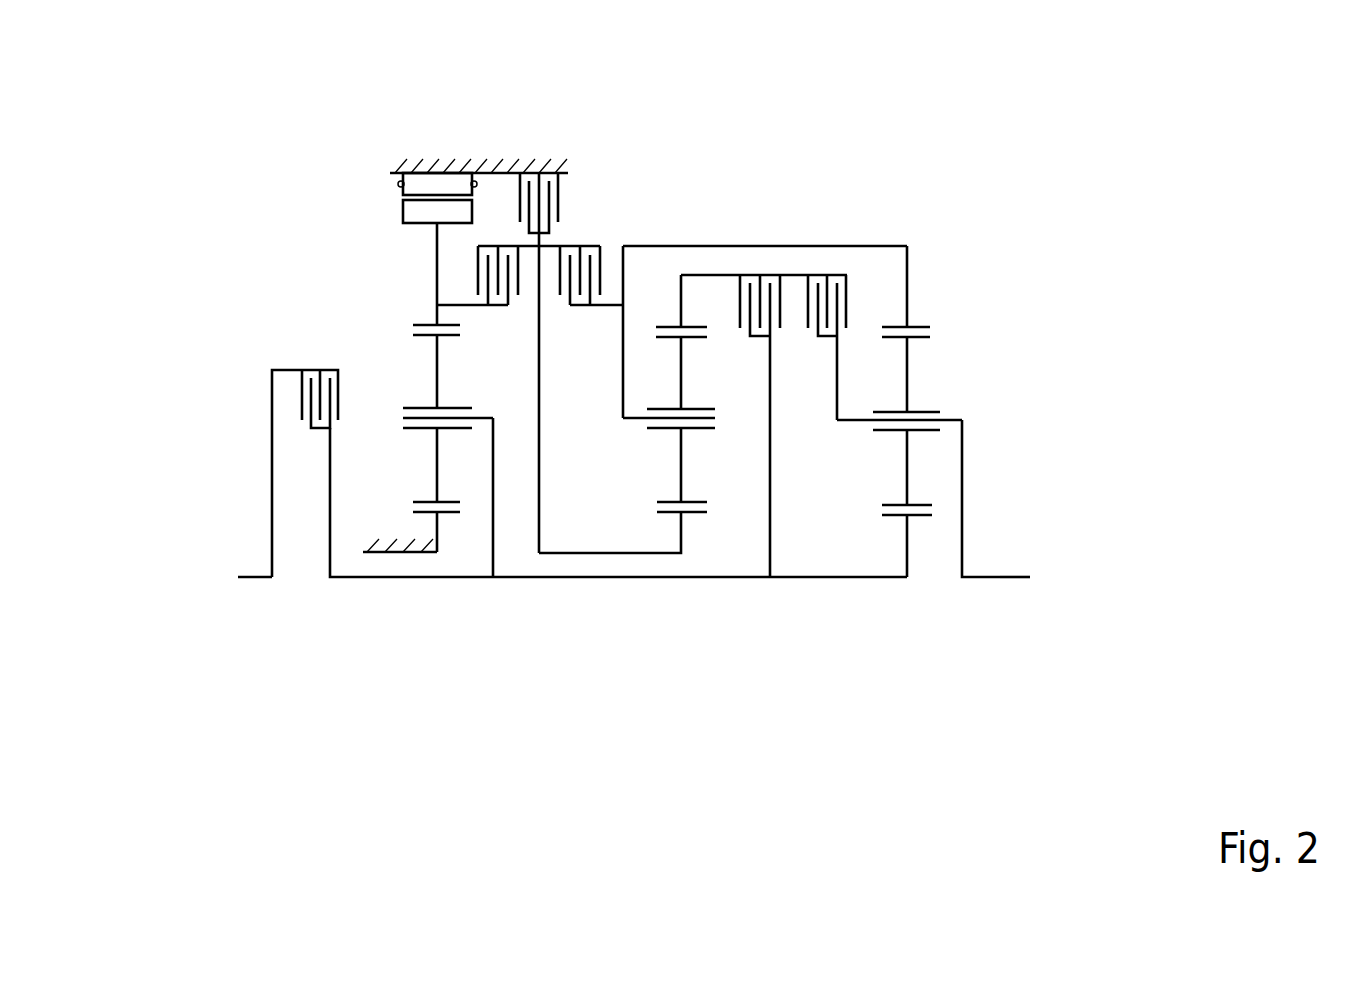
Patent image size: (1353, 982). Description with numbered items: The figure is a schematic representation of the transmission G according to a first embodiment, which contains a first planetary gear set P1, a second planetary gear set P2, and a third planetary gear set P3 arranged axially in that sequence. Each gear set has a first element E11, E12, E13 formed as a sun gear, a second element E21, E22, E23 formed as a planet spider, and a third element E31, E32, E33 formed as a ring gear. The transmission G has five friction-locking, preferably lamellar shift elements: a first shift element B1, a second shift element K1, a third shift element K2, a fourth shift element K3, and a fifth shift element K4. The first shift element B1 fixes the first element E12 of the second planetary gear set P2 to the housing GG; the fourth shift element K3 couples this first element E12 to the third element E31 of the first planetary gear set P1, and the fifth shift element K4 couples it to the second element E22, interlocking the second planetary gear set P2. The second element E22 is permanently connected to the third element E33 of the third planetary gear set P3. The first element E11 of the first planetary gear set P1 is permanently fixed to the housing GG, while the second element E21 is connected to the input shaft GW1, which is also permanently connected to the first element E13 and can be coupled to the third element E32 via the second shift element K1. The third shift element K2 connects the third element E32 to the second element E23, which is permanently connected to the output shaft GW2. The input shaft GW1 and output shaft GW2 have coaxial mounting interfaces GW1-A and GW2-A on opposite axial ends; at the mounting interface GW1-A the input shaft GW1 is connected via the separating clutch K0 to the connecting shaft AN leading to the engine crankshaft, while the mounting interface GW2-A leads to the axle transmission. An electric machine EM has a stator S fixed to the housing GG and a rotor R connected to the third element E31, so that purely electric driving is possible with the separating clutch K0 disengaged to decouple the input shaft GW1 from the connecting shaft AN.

The transmission G is at (228, 124).
The housing GG is at (518, 168).
The electric machine EM is at (411, 150).
The stator S is at (439, 183).
The rotor R is at (418, 212).
The first shift element B1 is at (567, 184).
The separating clutch K0 is at (295, 396).
The second shift element K1 is at (761, 268).
The third shift element K2 is at (828, 268).
The fourth shift element K3 is at (468, 272).
The fifth shift element K4 is at (583, 240).
The connecting shaft AN is at (253, 575).
The input shaft GW1 is at (380, 577).
The mounting interface GW1-A is at (338, 578).
The output shaft GW2 is at (980, 575).
The mounting interface GW2-A is at (1012, 579).
The first planetary gear set P1 is at (437, 585).
The second planetary gear set P2 is at (681, 585).
The third planetary gear set P3 is at (907, 585).
The first element E11 is at (440, 537).
The second element E21 is at (480, 416).
The third element E31 is at (437, 315).
The first element E12 is at (683, 535).
The second element E22 is at (635, 420).
The third element E32 is at (681, 300).
The first element E13 is at (903, 548).
The second element E23 is at (948, 417).
The third element E33 is at (908, 291).